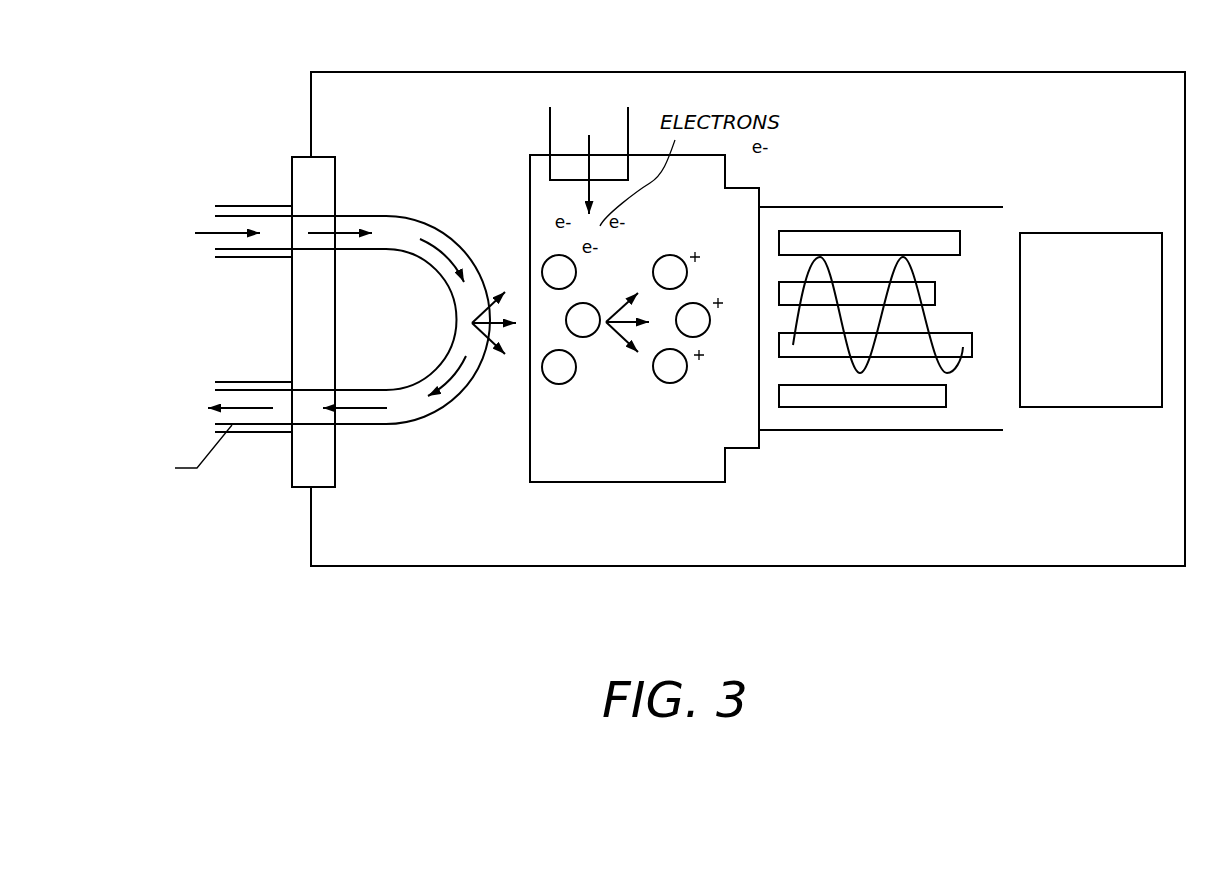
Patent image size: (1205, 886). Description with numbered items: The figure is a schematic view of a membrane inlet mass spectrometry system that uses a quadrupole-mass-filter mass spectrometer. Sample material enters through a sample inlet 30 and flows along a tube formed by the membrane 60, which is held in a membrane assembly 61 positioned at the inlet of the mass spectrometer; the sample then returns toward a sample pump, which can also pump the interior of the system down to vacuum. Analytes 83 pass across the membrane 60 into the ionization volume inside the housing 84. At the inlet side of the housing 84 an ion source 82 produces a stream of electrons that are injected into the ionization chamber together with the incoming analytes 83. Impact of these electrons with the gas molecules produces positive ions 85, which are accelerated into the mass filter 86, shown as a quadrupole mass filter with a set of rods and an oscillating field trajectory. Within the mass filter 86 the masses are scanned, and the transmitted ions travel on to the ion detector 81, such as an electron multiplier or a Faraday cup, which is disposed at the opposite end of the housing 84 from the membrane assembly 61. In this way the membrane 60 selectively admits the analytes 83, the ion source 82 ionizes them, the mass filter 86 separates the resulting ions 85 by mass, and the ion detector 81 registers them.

The sample inlet 30 is at (270, 212).
The membrane 60 is at (425, 215).
The membrane assembly 61 is at (303, 167).
The ion detector 81 is at (1078, 382).
The ion source 82 is at (548, 123).
The analytes 83 is at (562, 277).
The housing 84 is at (727, 566).
The ions 85 is at (668, 270).
The mass filter 86 is at (833, 240).